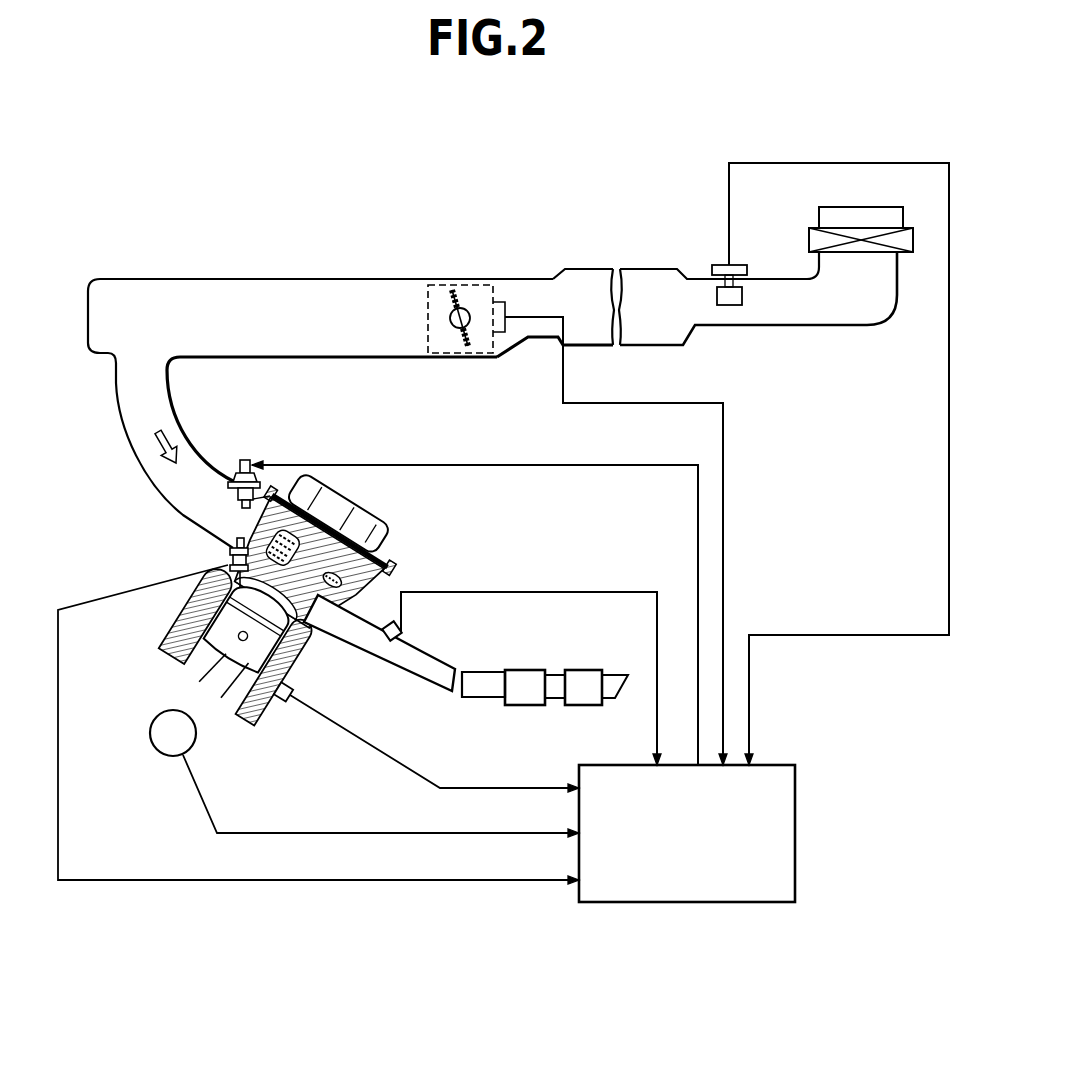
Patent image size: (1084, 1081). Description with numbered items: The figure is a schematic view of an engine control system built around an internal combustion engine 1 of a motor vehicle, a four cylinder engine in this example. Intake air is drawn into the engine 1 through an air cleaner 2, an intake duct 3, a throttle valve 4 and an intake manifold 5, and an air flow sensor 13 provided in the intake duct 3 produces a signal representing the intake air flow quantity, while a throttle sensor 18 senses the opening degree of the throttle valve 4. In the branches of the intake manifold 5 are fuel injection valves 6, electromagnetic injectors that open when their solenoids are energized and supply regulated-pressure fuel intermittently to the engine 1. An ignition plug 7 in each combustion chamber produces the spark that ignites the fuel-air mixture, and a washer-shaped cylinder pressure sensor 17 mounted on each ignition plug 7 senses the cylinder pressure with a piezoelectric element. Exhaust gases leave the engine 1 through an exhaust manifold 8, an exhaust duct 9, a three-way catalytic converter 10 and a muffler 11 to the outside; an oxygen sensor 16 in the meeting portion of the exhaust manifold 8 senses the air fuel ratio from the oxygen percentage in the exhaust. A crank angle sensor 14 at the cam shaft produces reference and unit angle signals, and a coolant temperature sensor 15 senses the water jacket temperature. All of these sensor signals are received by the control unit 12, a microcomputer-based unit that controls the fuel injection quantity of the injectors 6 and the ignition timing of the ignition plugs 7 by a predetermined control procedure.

The internal combustion engine 1 is at (408, 546).
The air cleaner 2 is at (916, 245).
The intake duct 3 is at (588, 268).
The throttle valve 4 is at (478, 330).
The intake manifold 5 is at (116, 389).
The fuel injection valve 6 is at (234, 480).
The ignition plug 7 is at (232, 551).
The exhaust manifold 8 is at (387, 612).
The exhaust duct 9 is at (478, 697).
The three-way catalytic converter 10 is at (527, 670).
The muffler 11 is at (583, 675).
The control unit 12 is at (797, 800).
The air flow sensor 13 is at (722, 265).
The crank angle sensor 14 is at (150, 732).
The coolant temperature sensor 15 is at (298, 695).
The oxygen sensor 16 is at (404, 633).
The cylinder pressure sensor 17 is at (230, 563).
The throttle sensor 18 is at (472, 285).